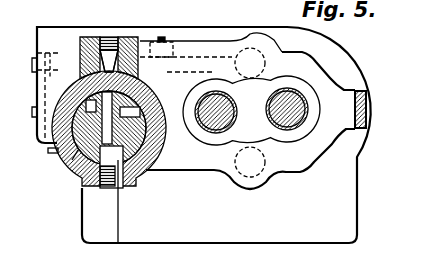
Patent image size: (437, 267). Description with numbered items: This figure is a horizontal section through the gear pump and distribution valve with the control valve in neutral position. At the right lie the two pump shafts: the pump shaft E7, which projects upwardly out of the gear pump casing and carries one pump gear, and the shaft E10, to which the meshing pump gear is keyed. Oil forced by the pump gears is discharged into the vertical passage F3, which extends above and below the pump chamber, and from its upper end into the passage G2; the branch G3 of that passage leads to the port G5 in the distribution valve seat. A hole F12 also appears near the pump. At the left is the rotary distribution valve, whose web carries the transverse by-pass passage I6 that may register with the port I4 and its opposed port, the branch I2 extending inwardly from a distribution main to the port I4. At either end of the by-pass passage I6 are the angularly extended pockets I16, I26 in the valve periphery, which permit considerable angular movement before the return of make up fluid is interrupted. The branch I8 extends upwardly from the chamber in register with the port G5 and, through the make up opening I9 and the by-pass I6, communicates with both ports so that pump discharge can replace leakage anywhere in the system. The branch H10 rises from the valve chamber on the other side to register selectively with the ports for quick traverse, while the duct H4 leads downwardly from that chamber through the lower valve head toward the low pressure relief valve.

The branch H10 is at (83, 70).
The duct H4 is at (70, 145).
The passage G2 is at (184, 55).
The branch G3 is at (173, 122).
The port G5 is at (157, 143).
The pump shaft E7 is at (216, 105).
The shaft E10 is at (282, 107).
The vertical passage F3 is at (250, 63).
The bolt hole F12 is at (251, 163).
The branch I2 is at (118, 243).
The port I4 is at (100, 186).
The by-pass passage I6 is at (103, 82).
The branch I8 is at (112, 82).
The make up opening I9 is at (120, 70).
The pocket I16 is at (72, 160).
The pocket I26 is at (52, 78).